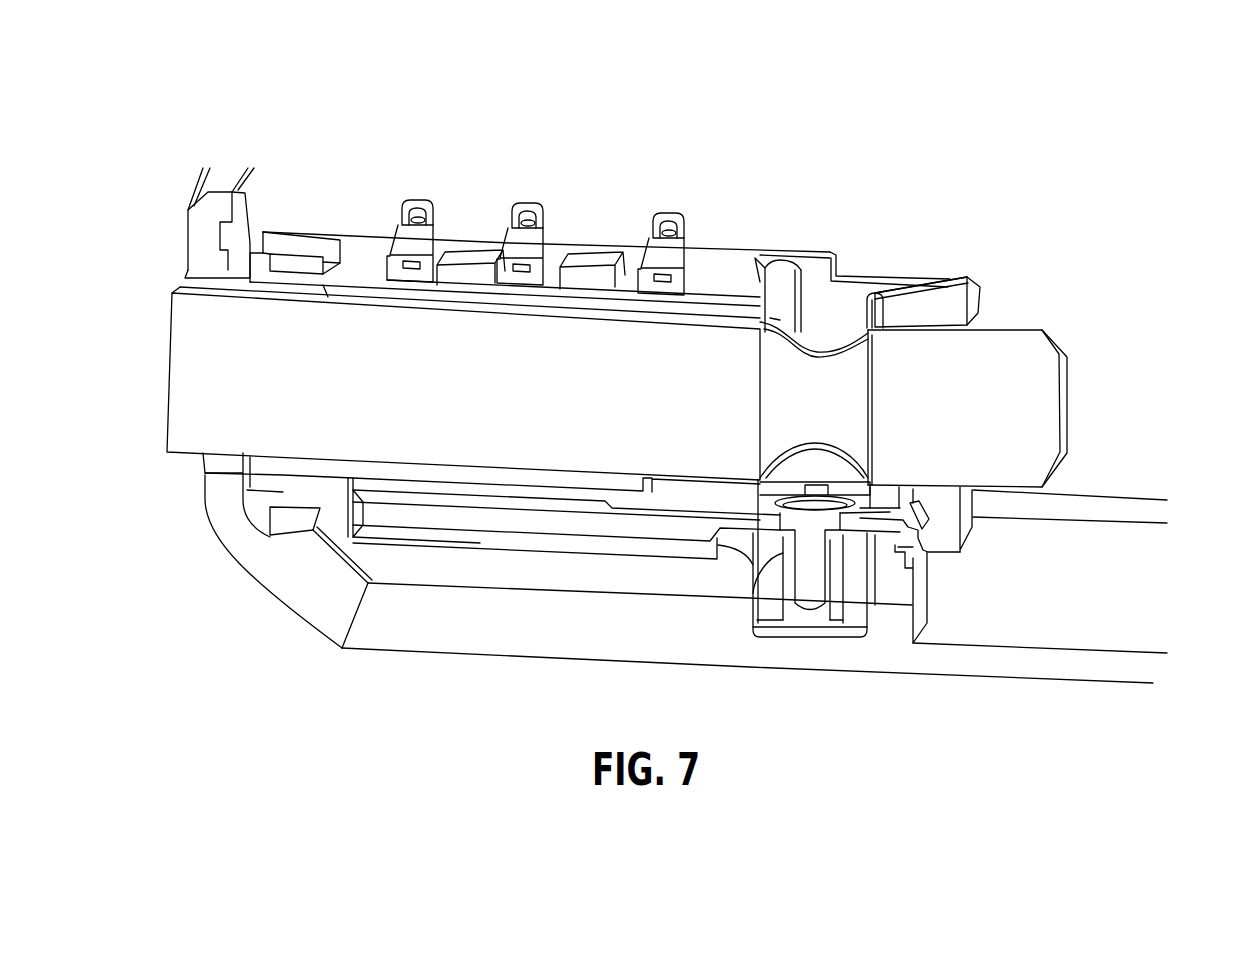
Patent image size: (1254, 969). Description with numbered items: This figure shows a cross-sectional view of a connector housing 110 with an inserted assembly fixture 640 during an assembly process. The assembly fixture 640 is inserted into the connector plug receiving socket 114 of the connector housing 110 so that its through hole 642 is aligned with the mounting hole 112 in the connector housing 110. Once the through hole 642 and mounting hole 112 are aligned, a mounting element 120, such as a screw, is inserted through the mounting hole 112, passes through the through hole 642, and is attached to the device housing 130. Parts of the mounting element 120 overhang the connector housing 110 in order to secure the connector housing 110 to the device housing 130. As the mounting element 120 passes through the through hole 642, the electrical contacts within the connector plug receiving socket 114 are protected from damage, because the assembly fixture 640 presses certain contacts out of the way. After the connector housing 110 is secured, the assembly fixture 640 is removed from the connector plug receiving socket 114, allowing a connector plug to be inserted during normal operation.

The connector housing 110 is at (430, 118).
The mounting hole 112 is at (913, 232).
The connector plug receiving socket 114 is at (182, 281).
The mounting element 120 is at (749, 597).
The device housing 130 is at (294, 605).
The assembly fixture 640 is at (1060, 397).
The through hole 642 is at (815, 352).